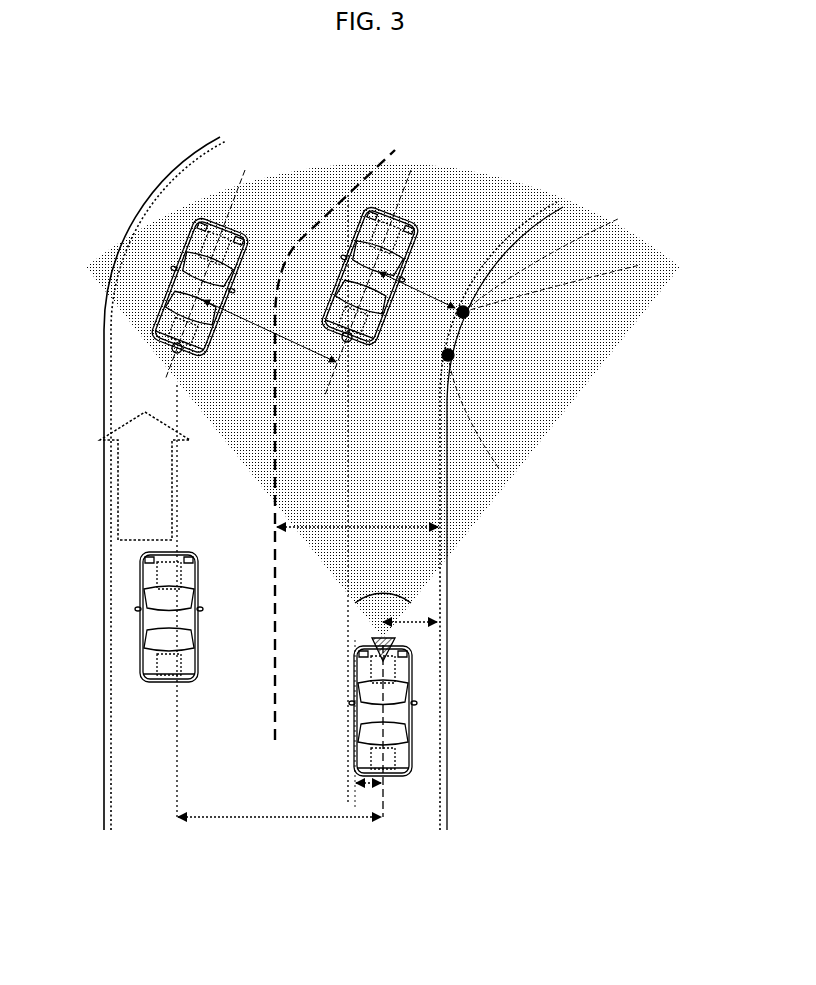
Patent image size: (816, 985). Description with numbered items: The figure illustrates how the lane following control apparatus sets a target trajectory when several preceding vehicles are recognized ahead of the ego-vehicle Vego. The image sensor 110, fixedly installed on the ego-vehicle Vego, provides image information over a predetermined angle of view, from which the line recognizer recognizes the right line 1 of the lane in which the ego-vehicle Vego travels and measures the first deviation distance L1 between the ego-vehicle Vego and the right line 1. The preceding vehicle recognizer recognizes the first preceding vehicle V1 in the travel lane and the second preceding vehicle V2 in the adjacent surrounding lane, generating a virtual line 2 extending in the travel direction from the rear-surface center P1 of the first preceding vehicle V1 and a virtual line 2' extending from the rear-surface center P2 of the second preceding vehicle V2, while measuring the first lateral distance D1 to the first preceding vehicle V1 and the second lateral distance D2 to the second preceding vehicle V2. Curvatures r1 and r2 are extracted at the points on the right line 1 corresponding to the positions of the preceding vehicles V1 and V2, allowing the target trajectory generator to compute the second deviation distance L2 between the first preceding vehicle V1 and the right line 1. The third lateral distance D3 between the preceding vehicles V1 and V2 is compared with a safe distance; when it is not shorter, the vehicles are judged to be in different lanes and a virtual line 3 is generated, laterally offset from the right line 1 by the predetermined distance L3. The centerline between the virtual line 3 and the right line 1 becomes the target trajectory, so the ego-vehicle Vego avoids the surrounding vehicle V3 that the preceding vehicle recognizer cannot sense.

The right line 1 is at (447, 790).
The virtual line 2 is at (322, 500).
The virtual line 2' is at (164, 602).
The virtual line 3 is at (272, 717).
The image sensor 110 is at (392, 657).
The ego-vehicle Vego is at (395, 717).
The first preceding vehicle V1 is at (425, 233).
The second preceding vehicle V2 is at (245, 231).
The surrounding vehicle V3 is at (140, 632).
The center of rear surface of first preceding vehicle P1 is at (342, 339).
The center of rear surface of second preceding vehicle P2 is at (173, 351).
The curvature r1 is at (470, 317).
The curvature r2 is at (455, 358).
The first lateral distance D1 is at (368, 725).
The second lateral distance D2 is at (279, 830).
The third lateral distance D3 is at (269, 331).
The first deviation distance L1 is at (410, 636).
The second deviation distance L2 is at (417, 293).
The predetermined distance L3 is at (357, 541).